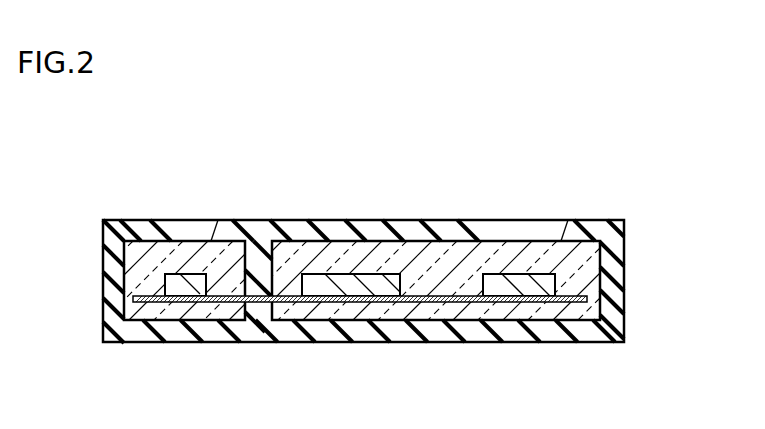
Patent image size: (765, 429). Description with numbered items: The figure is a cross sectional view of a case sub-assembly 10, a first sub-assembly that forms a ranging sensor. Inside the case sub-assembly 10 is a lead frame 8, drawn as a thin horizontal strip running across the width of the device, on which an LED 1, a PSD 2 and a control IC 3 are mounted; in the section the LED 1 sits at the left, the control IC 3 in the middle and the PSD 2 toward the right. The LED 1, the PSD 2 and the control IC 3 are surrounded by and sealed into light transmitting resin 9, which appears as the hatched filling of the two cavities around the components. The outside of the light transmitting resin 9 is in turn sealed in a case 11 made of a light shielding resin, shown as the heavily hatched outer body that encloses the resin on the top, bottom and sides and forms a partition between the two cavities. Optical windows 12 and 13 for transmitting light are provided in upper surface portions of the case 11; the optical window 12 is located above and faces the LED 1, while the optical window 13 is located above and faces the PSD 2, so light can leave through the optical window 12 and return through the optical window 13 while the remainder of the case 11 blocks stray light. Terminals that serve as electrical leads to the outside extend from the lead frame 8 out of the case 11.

The LED 1 is at (182, 285).
The PSD 2 is at (516, 285).
The control IC 3 is at (347, 283).
The lead frame 8 is at (570, 302).
The light transmitting resin 9 is at (142, 261).
The case sub-assembly 10 is at (397, 209).
The case 11 is at (297, 228).
The optical window 12 is at (186, 228).
The optical window 13 is at (519, 228).